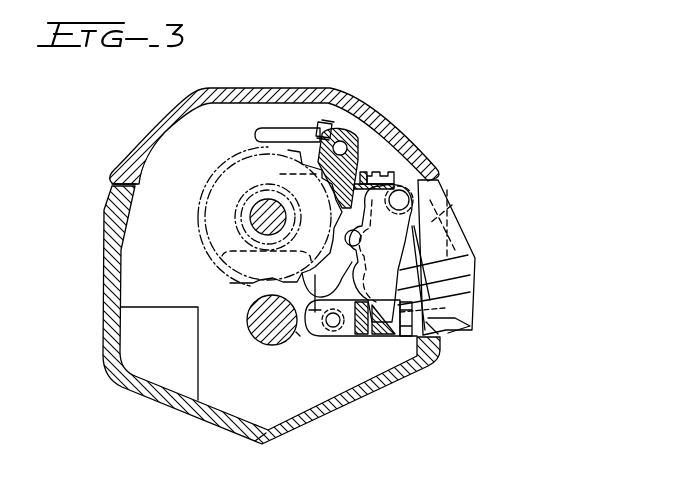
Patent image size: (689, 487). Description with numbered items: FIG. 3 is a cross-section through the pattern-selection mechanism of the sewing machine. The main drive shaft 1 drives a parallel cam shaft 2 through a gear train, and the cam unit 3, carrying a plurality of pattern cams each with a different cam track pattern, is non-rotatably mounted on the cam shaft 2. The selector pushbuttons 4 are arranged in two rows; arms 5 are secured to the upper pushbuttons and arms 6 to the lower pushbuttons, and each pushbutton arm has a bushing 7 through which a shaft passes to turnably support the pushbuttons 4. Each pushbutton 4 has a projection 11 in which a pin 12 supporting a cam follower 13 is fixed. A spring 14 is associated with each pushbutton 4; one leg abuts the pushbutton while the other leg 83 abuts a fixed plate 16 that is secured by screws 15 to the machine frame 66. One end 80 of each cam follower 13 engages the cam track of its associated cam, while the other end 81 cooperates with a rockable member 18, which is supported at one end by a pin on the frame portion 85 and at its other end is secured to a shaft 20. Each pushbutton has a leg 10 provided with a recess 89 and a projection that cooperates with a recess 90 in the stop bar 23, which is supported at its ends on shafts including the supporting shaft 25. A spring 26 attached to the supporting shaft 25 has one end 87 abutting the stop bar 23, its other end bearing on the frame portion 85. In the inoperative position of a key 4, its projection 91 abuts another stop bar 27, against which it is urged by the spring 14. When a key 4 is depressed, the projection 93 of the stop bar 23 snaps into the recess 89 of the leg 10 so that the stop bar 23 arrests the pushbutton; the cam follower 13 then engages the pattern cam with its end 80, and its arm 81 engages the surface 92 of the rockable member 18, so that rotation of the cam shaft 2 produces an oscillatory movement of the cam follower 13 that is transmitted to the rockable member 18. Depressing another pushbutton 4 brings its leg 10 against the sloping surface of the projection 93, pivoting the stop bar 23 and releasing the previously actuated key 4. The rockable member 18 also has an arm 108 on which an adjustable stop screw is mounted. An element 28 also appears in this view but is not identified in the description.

The main drive shaft 1 is at (262, 344).
The cam shaft 2 is at (252, 215).
The cam unit 3 is at (214, 262).
The pushbuttons 4 is at (463, 235).
The arms 5 is at (452, 205).
The arms 6 is at (440, 312).
The bushing 7 is at (432, 180).
The leg 10 is at (420, 290).
The projection 11 is at (344, 240).
The pin 12 is at (332, 220).
The cam follower 13 is at (338, 268).
The spring 14 is at (430, 262).
The screws 15 is at (390, 185).
The fixed plate 16 is at (382, 170).
The rockable member 18 is at (320, 99).
The shaft 20 is at (343, 140).
The stop bar 23 is at (362, 336).
The supporting shaft 25 is at (318, 339).
The spring 26 is at (318, 320).
The stop bar 27 is at (440, 336).
The housing 28 is at (437, 362).
The machine frame 66 is at (262, 441).
The end of cam follower 80 is at (305, 275).
The end of cam follower 81 is at (328, 196).
The leg of spring 83 is at (404, 188).
The frame portion 85 is at (222, 387).
The end of spring 87 is at (336, 330).
The recess 89 is at (432, 298).
The recess 90 is at (382, 336).
The projection 91 is at (455, 328).
The surface 92 is at (364, 170).
The projection 93 is at (406, 337).
The arm 108 is at (262, 131).